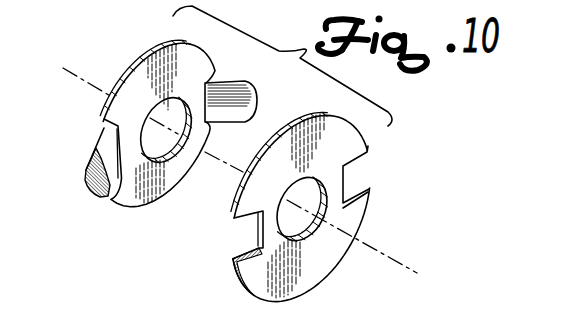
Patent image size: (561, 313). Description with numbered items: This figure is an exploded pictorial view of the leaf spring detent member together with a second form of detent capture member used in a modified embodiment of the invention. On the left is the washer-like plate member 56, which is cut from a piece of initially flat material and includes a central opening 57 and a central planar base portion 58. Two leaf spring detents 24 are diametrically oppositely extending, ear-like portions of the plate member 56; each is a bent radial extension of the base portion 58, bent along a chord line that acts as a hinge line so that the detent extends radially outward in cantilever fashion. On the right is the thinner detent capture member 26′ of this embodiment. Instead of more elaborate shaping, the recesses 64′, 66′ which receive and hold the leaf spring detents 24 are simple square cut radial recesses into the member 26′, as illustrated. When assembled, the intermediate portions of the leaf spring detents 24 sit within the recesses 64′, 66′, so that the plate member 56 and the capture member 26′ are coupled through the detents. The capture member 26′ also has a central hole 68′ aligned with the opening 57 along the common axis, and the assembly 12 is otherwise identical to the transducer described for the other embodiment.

The torque sensing assembly 12 is at (542, 312).
The leaf spring detents 24 is at (258, 100).
The detent capture member 26′ is at (442, 204).
The plate member 56 is at (120, 210).
The central opening 57 is at (170, 113).
The central planar base portion 58 is at (159, 181).
The recess 64′ is at (245, 240).
The recess 66′ is at (352, 175).
The central hole of second disc 68′ is at (305, 240).